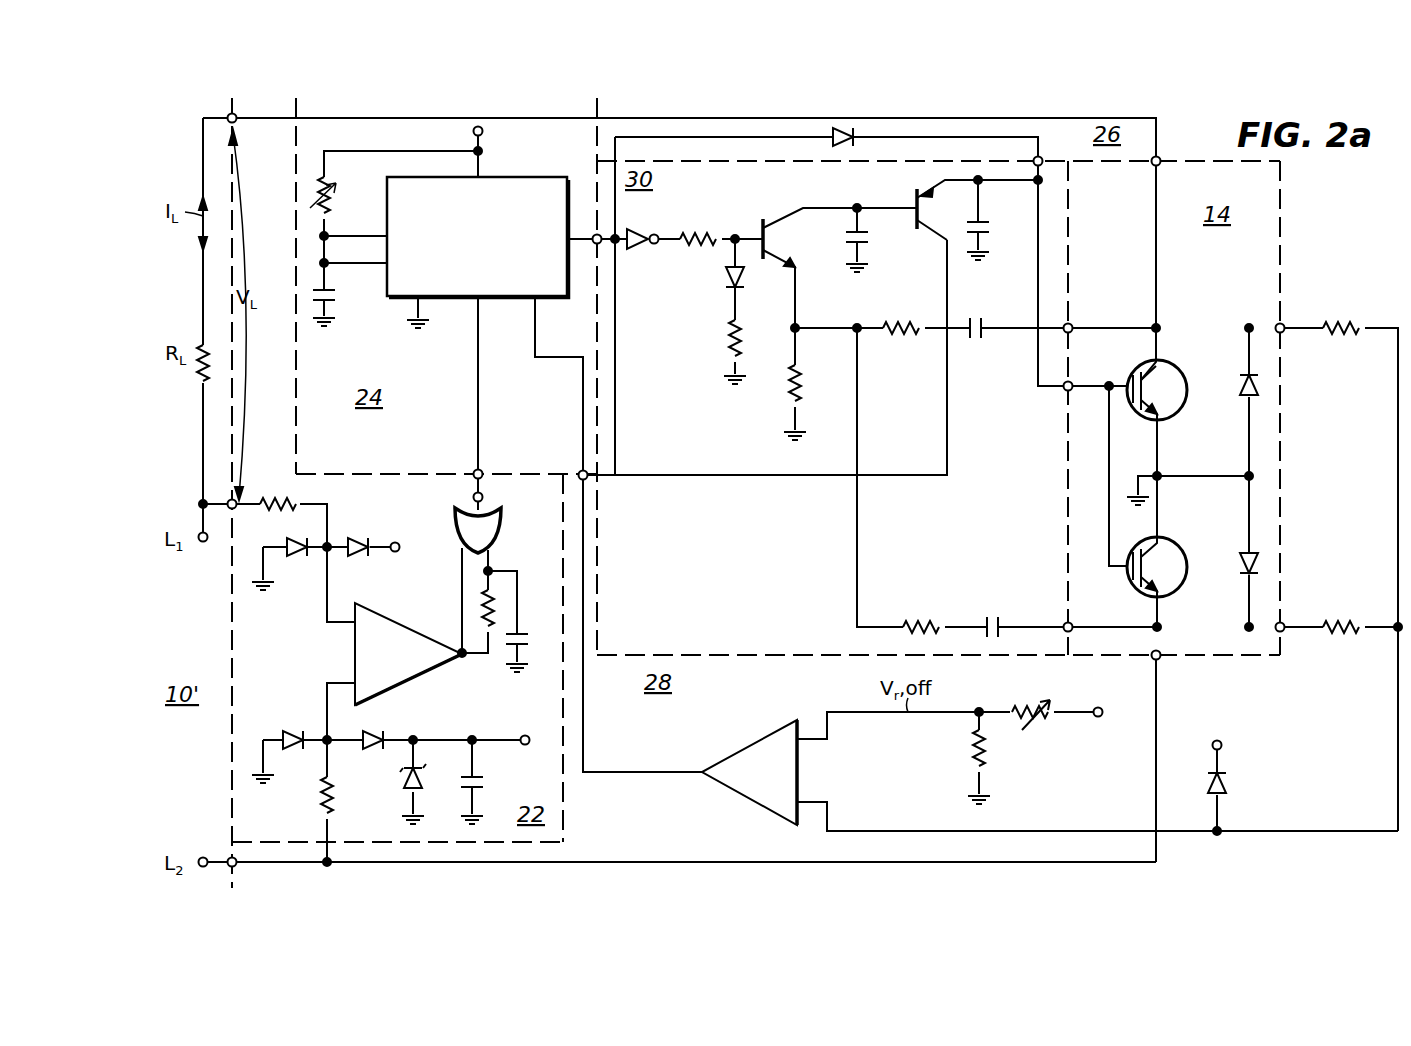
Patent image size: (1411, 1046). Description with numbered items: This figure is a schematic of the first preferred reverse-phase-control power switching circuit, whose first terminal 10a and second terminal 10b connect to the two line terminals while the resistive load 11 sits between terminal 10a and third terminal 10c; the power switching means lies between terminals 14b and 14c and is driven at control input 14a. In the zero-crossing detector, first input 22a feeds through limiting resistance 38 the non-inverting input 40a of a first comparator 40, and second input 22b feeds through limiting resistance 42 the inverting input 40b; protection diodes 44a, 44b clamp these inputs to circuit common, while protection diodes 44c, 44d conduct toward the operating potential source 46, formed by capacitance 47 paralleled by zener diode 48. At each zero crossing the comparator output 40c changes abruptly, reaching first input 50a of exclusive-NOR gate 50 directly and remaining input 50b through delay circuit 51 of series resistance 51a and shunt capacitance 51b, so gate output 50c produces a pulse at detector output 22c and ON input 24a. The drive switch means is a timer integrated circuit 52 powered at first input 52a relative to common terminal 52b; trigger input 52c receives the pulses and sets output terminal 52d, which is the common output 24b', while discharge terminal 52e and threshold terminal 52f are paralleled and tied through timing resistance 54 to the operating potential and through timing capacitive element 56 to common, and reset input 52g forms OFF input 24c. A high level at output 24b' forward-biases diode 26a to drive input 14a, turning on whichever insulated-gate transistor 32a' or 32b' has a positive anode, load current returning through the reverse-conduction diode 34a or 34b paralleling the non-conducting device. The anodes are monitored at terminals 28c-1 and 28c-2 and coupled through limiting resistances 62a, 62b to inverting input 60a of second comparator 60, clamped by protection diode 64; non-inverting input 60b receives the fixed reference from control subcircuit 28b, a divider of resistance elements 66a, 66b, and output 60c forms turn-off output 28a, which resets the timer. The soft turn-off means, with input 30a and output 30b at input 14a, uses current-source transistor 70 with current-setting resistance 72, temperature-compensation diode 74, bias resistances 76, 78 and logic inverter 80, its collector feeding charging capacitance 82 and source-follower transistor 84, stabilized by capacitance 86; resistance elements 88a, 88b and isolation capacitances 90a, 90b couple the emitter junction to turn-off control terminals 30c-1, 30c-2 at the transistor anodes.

The first circuit terminal 10a is at (242, 500).
The second circuit terminal 10b is at (238, 866).
The third circuit terminal 10c is at (240, 123).
The resistive load 11 is at (196, 340).
The drive input 14a is at (1073, 382).
The power switching means terminal 14b is at (1161, 660).
The power switching means terminal 14c is at (1160, 158).
The first detector input 22a is at (248, 512).
The second detector input 22b is at (330, 836).
The zero-crossing detector output 22c is at (472, 478).
The first (ON) input 24a is at (474, 472).
The common output 24b' is at (633, 278).
The second (OFF) input 24c is at (580, 472).
The diode 26a is at (842, 128).
The turn-off set means output 28a is at (590, 482).
The control subcircuit 28b is at (1044, 735).
The monitoring terminal 28c-1 is at (1286, 334).
The monitoring terminal 28c-2 is at (1286, 622).
The drive turn-off means input terminal 30a is at (618, 247).
The drive turn-off means output terminal 30b is at (990, 222).
The first turn-off control terminal 30c-1 is at (1068, 316).
The second turn-off control terminal 30c-2 is at (1066, 622).
The insulated-gate transistor 32a' is at (1176, 403).
The insulated-gate transistor 32b' is at (1172, 508).
The reverse-conduction diode 34a is at (1240, 390).
The reverse-conduction diode 34b is at (1237, 560).
The limiting series resistance 38 is at (296, 500).
The first comparator 40 is at (355, 634).
The non-inverting input 40a is at (345, 625).
The inverting input 40b is at (347, 682).
The first comparator output 40c is at (455, 660).
The limiting resistance 42 is at (320, 790).
The first protection diode 44a is at (293, 558).
The second protection diode 44b is at (290, 732).
The protection diode 44c is at (358, 541).
The protection diode 44d is at (372, 752).
The operating potential source 46 is at (436, 735).
The capacitance 47 is at (485, 782).
The zener diode 48 is at (428, 778).
The exclusive-NOR gate 50 is at (456, 519).
The first gate input 50a is at (462, 568).
The second gate input 50b is at (497, 550).
The gate output 50c is at (486, 498).
The delay circuit 51 is at (520, 628).
The series resistance 51a is at (495, 577).
The shunt capacitance 51b is at (522, 648).
The timer integrated circuit 52 is at (448, 298).
The first input 52a is at (484, 158).
The common terminal 52b is at (412, 306).
The trigger input terminal 52c is at (480, 395).
The output terminal 52d is at (576, 228).
The discharge terminal 52e is at (368, 236).
The threshold terminal 52f is at (357, 264).
The reset input 52g is at (565, 334).
The timing resistance 54 is at (340, 186).
The timing capacitive element 56 is at (312, 292).
The second comparator 60 is at (735, 748).
The inverting input 60a is at (822, 800).
The non-inverting input 60b is at (808, 740).
The second comparator output 60c is at (648, 770).
The limiting resistance 62a is at (1340, 322).
The limiting resistance 62b is at (1345, 635).
The protection diode 64 is at (1230, 790).
The voltage divider resistance element 66a is at (1028, 700).
The voltage divider resistance element 66b is at (972, 752).
The current-source transistor 70 is at (778, 215).
The current-setting resistance 72 is at (803, 380).
The temperature-compensation diode 74 is at (728, 282).
The first bias resistance 76 is at (728, 340).
The second bias resistance 78 is at (703, 228).
The logic inverter 80 is at (641, 232).
The charging capacitance 82 is at (868, 240).
The source-follower transistor 84 is at (916, 200).
The stabilization capacitance 86 is at (952, 238).
The resistance element 88a is at (890, 322).
The resistance element 88b is at (908, 620).
The isolation capacitance 90a is at (985, 322).
The isolation capacitance 90b is at (985, 620).